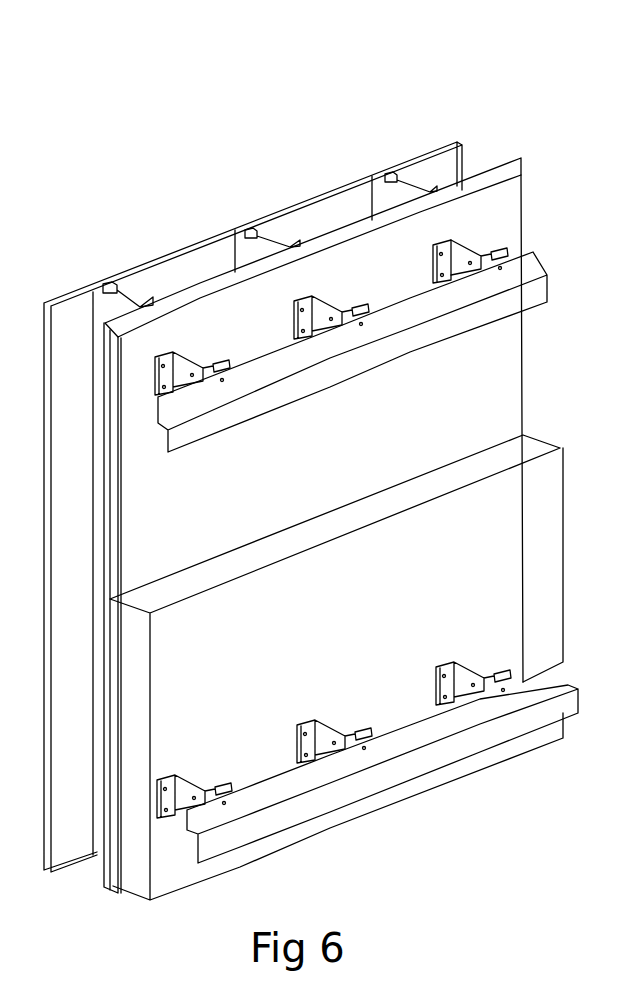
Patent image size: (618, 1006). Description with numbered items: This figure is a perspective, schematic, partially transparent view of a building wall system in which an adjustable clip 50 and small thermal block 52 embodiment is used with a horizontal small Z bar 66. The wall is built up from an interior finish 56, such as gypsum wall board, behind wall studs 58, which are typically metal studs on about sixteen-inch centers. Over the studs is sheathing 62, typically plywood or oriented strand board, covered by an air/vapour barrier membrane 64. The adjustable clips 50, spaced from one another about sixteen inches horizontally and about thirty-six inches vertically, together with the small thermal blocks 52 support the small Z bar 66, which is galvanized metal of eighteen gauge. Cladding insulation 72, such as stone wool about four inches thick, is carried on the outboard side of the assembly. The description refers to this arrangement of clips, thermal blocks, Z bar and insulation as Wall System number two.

The adjustable clip 50 is at (466, 250).
The small thermal block 52 is at (442, 247).
The interior finish 56 is at (174, 253).
The wall stud 58 is at (263, 252).
The sheathing 62 is at (372, 232).
The air/vapour barrier membrane 64 is at (408, 238).
The small Z bar 66 is at (458, 747).
The cladding insulation 72 is at (368, 805).